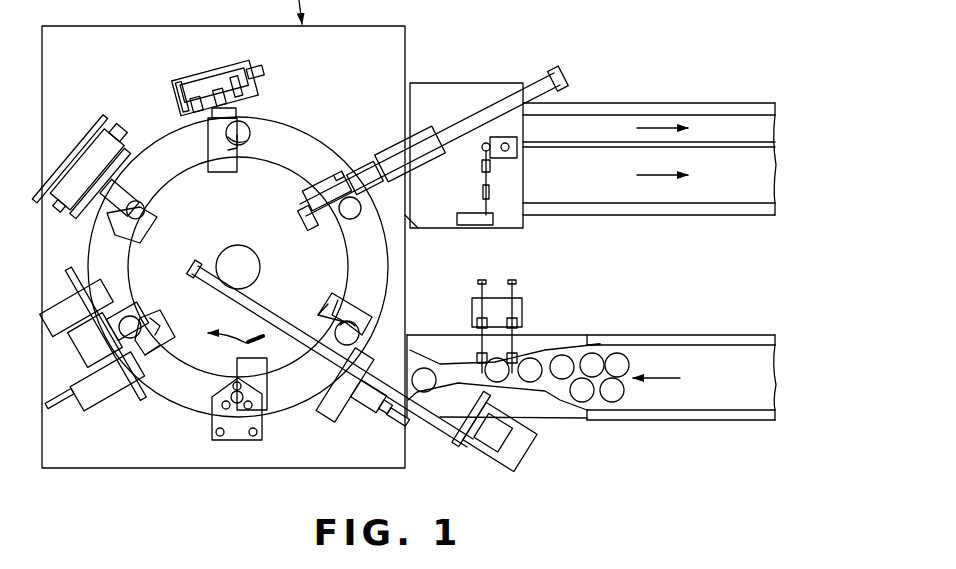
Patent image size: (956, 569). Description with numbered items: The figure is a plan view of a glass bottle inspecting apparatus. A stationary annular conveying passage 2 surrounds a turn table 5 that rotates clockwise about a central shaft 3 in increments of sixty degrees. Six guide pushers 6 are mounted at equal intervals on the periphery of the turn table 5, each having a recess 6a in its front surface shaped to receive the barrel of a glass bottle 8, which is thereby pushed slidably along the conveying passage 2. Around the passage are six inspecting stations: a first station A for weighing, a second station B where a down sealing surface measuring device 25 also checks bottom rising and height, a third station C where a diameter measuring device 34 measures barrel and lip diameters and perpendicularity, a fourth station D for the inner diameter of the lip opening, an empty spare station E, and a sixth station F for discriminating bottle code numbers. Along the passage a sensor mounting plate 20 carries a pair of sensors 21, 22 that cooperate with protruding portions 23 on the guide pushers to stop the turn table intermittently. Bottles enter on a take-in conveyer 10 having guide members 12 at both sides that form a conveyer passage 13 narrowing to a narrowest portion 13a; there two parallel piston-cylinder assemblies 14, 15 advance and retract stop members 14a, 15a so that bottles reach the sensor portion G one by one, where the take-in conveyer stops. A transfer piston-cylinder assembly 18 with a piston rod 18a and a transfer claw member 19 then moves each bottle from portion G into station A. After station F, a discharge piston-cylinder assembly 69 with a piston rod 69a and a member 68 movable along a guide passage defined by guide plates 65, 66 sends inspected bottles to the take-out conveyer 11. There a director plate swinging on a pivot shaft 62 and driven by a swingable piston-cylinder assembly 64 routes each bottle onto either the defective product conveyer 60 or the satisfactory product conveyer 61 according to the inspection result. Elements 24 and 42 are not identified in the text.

The annular conveying passage 2 is at (297, 128).
The central shaft 3 is at (222, 252).
The turn table 5 is at (227, 219).
The guide pusher 6 is at (206, 172).
The recess 6a is at (246, 150).
The glass bottle 8 is at (250, 136).
The take-in conveyer 10 is at (660, 333).
The take-out conveyer 11 is at (697, 102).
The guide member 12 is at (612, 345).
The conveyer passage 13 is at (717, 346).
The narrowest portion 13a is at (494, 384).
The piston-cylinder assembly 14 is at (478, 290).
The stop member 14a is at (478, 360).
The piston-cylinder assembly 15 is at (517, 291).
The stop member 15a is at (517, 360).
The transfer piston-cylinder assembly 18 is at (377, 400).
The piston rod 18a is at (450, 432).
The transfer claw member 19 is at (516, 442).
The sensor mounting plate 20 is at (198, 78).
The sensor 21 is at (168, 96).
The sensor 22 is at (214, 86).
The protruding portion 23 is at (236, 113).
The closing unit actuator 24 is at (247, 82).
The down sealing surface measuring device 25 is at (266, 424).
The diameter measuring device 34 is at (112, 410).
The inspection unit 42 is at (78, 118).
The defective product conveyer 60 is at (603, 104).
The satisfactory product conveyer 61 is at (618, 205).
The pivot shaft 62 is at (517, 153).
The swingable piston-cylinder assembly 64 is at (484, 192).
The guide plate 65 is at (395, 136).
The guide plate 66 is at (412, 222).
The movable member 68 is at (302, 216).
The discharge piston-cylinder assembly 69 is at (512, 105).
The piston rod 69a is at (365, 168).
The first station A is at (356, 300).
The second station B is at (264, 386).
The third station C is at (152, 352).
The fourth station D is at (120, 234).
The fifth station E is at (236, 145).
The sixth station F is at (331, 168).
The sensor portion G is at (424, 386).